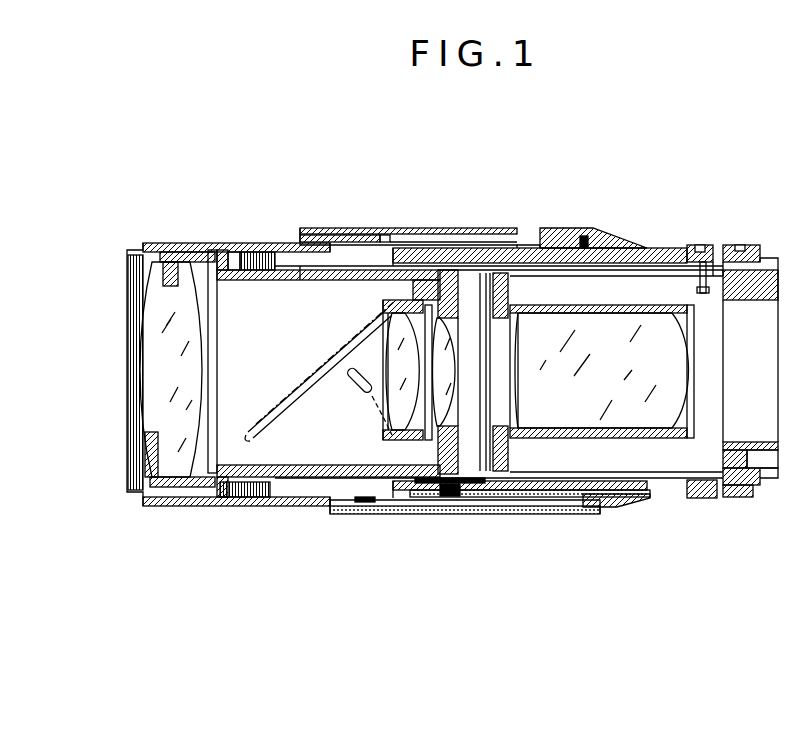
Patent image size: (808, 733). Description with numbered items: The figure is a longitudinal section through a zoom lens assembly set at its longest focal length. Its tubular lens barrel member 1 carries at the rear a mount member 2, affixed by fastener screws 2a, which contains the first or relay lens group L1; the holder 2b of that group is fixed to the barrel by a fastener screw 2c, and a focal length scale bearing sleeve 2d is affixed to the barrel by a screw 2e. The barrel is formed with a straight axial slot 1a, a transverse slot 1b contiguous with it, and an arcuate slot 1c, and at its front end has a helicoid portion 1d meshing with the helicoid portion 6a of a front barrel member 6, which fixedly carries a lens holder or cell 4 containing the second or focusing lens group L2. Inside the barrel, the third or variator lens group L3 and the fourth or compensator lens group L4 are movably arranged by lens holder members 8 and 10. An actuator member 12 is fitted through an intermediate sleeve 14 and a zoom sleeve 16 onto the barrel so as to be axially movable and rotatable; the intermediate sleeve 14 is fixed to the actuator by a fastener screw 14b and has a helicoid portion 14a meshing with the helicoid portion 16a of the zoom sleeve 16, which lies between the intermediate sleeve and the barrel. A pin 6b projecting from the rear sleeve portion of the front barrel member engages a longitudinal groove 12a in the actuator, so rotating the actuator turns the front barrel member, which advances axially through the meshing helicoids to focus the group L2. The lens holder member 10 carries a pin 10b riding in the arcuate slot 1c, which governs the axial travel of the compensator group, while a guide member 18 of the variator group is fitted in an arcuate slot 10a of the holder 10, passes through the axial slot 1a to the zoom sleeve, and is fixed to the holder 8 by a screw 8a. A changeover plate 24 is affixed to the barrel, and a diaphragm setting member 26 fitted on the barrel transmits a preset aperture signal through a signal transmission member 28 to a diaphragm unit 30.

The lens barrel member 1 is at (222, 250).
The straight axial slot 1a is at (310, 281).
The transverse slot 1b is at (260, 281).
The arcuate slot 1c is at (400, 438).
The helicoid portion 1d is at (211, 250).
The mount member 2 is at (776, 270).
The fastener screws 2a is at (770, 478).
The holder of the first lens group 2b is at (640, 438).
The fastener screw 2c is at (500, 480).
The focal length scale bearing sleeve 2d is at (690, 498).
The screw 2e is at (666, 498).
The lens holder or cell 4 is at (157, 268).
The front barrel member 6 is at (150, 243).
The helicoid portion 6a is at (176, 252).
The pin 6b is at (385, 235).
The lens holder member 8 is at (392, 440).
The screw 8a is at (412, 290).
The lens holder member 10 is at (325, 289).
The arcuate slot 10a is at (312, 385).
The pin 10b is at (364, 502).
The actuator member 12 is at (322, 228).
The longitudinal groove 12a is at (521, 245).
The intermediate sleeve 14 is at (620, 507).
The helicoid portion 14a is at (455, 484).
The fastener screw 14b is at (583, 236).
The zoom sleeve 16 is at (478, 249).
The helicoid portion 16a is at (447, 497).
The guide member 18 is at (460, 372).
The changeover plate 24 is at (249, 252).
The diaphragm setting member 26 is at (698, 246).
The signal transmission member 28 is at (697, 294).
The diaphragm unit 30 is at (490, 477).
The first or relay lens group L1 is at (592, 414).
The second or focusing lens group L2 is at (152, 428).
The third or variator lens group L3 is at (386, 376).
The fourth or compensator lens group L4 is at (440, 380).